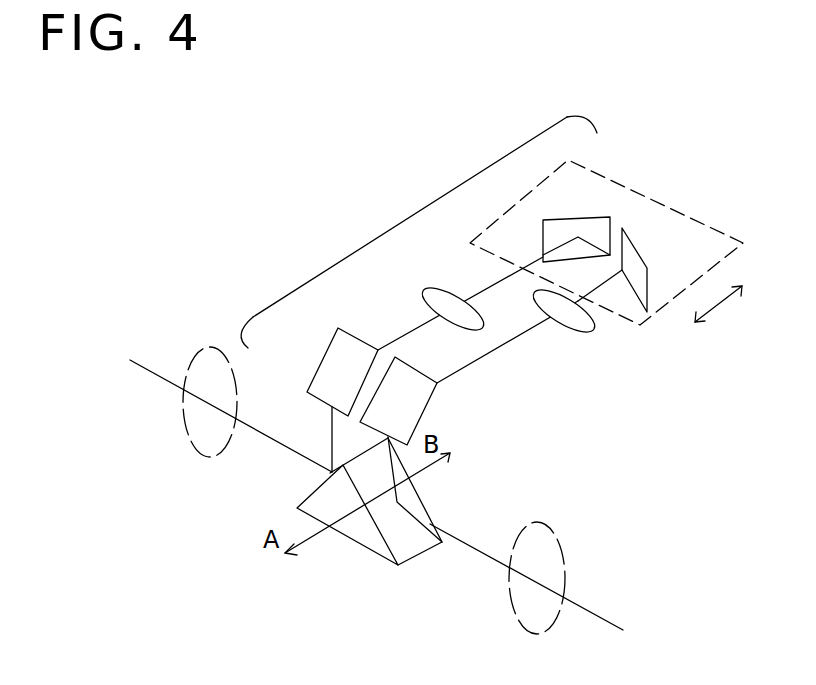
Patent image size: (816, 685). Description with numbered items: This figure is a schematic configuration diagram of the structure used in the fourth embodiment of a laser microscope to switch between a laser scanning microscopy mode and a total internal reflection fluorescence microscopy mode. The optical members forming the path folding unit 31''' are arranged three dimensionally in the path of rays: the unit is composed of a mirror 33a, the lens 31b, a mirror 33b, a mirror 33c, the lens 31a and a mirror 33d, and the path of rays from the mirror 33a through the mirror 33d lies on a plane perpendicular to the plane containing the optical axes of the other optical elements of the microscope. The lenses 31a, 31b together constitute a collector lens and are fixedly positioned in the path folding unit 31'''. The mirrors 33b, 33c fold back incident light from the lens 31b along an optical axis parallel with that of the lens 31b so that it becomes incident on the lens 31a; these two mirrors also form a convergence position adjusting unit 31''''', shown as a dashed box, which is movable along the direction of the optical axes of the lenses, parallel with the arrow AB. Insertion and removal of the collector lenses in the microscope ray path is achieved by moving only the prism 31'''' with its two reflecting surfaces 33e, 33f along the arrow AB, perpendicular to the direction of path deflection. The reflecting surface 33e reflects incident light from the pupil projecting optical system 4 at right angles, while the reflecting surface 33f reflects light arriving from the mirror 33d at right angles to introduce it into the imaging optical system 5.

The pupil projecting optical system 4 is at (548, 526).
The imaging optical system 5 is at (212, 348).
The path folding unit 31''' is at (419, 233).
The prism 31'''' is at (432, 474).
The convergence position adjusting unit 31''''' is at (606, 231).
The lens 31a is at (430, 298).
The lens 31b is at (572, 323).
The mirror 33a is at (406, 408).
The mirror 33b is at (693, 262).
The mirror 33c is at (565, 219).
The mirror 33d is at (328, 371).
The reflecting surface 33e is at (394, 517).
The reflecting surface 33f is at (315, 491).